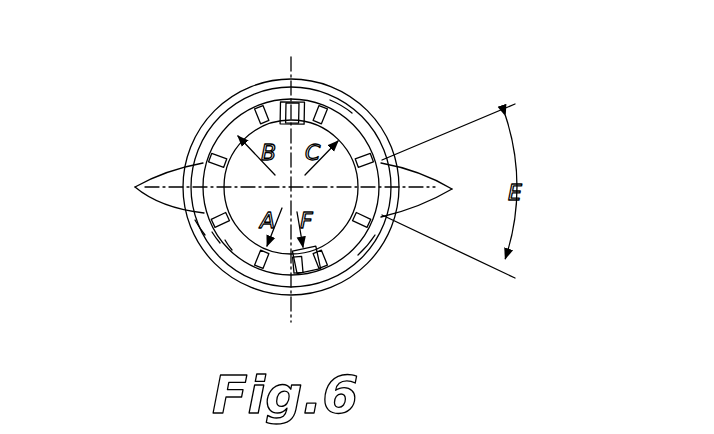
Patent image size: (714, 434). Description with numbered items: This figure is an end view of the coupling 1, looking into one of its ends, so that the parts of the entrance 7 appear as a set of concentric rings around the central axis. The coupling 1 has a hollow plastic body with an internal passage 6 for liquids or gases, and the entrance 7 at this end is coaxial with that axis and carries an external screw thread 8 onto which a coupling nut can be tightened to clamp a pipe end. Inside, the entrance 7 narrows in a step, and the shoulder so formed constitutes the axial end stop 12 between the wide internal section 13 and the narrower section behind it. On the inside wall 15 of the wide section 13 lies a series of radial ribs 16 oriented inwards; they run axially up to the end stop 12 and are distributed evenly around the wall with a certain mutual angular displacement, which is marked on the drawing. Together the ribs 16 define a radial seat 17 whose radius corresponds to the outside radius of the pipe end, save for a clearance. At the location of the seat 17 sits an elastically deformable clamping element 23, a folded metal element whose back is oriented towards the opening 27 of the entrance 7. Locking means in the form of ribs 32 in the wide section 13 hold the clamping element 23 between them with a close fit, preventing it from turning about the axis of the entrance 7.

The coupling 1 is at (132, 47).
The internal passage 6 is at (228, 135).
The entrance 7 is at (220, 243).
The external screw thread 8 is at (203, 140).
The axial end stop 12 is at (240, 132).
The wide internal section 13 is at (354, 256).
The inside wall 15 is at (352, 113).
The radial ribs 16 is at (378, 318).
The radial seat 17 is at (205, 235).
The clamping element 23 is at (300, 100).
The opening 27 is at (232, 250).
The locking means / ribs 32 is at (280, 102).